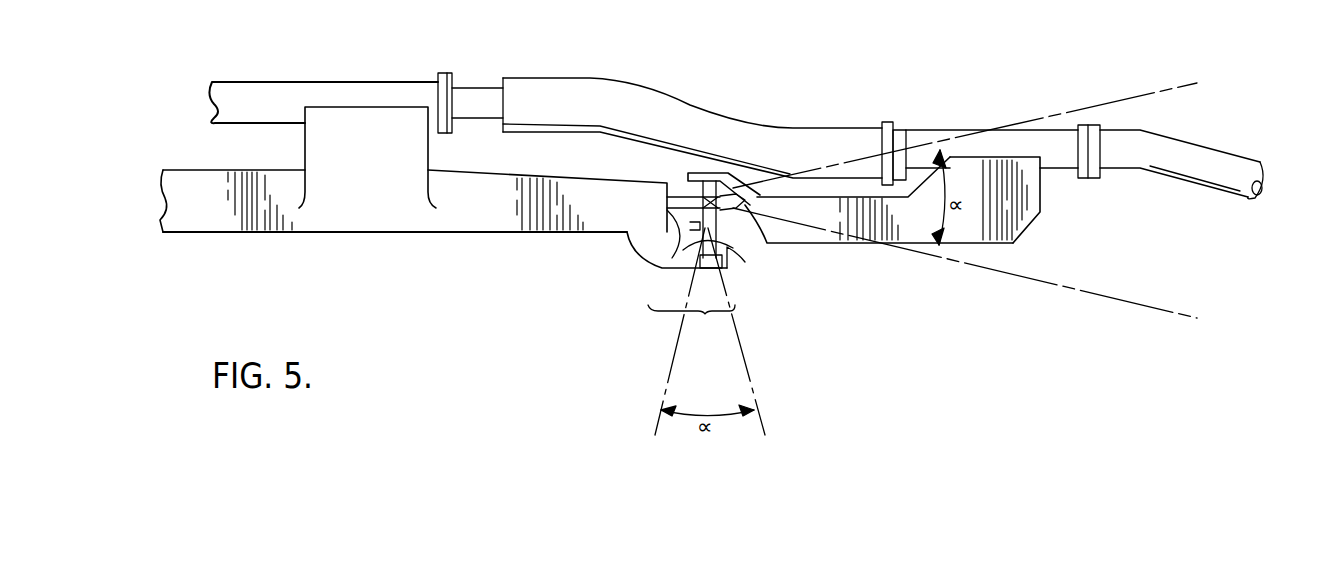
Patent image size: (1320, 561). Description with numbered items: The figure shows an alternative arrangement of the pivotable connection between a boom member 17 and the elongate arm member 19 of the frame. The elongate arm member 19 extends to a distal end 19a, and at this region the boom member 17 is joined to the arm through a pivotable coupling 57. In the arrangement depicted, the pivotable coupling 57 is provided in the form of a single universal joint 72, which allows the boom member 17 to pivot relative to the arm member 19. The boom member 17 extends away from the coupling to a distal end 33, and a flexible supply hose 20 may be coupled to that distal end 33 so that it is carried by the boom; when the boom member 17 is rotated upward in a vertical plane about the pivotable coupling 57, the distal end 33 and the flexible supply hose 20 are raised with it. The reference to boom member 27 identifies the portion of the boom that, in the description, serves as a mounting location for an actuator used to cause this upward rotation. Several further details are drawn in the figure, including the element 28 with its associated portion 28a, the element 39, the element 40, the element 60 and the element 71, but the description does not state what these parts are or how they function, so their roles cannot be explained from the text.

The boom member 17 is at (903, 230).
The elongate arm member 19 is at (455, 222).
The distal end of elongate arm member 19a is at (727, 250).
The flexible supply hose 20 is at (1215, 165).
The boom member 27 is at (1028, 195).
The valve stem 28 is at (745, 213).
The feed channel 28a is at (697, 173).
The distal end of boom member 33 is at (1040, 143).
The supply hose 39 is at (747, 125).
The supply tube with clamp 40 is at (390, 87).
The pivotable coupling 57 is at (691, 327).
The valve ball 60 is at (670, 240).
The valve seat 71 is at (722, 262).
The universal joint 72 is at (622, 236).